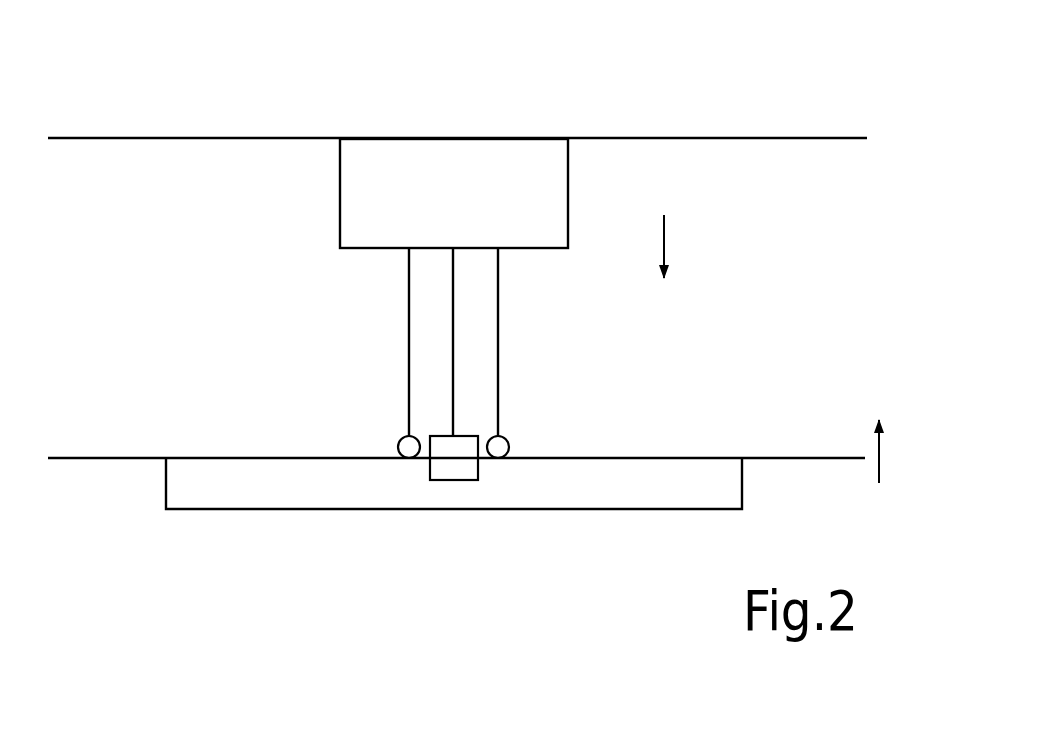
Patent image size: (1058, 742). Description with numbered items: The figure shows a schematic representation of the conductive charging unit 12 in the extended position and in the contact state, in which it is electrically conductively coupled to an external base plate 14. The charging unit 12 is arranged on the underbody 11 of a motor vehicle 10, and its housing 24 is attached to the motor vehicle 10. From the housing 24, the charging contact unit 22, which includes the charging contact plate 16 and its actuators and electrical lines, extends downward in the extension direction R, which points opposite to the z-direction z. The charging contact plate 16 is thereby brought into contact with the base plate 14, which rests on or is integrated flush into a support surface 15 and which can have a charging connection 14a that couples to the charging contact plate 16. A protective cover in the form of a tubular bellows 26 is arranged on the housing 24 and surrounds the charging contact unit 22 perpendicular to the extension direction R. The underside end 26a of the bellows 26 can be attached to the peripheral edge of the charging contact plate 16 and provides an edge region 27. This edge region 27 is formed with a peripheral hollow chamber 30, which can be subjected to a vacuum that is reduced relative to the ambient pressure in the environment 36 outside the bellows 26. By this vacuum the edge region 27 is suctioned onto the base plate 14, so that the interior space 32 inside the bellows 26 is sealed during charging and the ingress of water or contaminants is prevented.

The motor vehicle 10 is at (556, 103).
The underbody 11 is at (665, 138).
The housing 24 is at (336, 192).
The protective cover (tubular bellows) 26 is at (403, 300).
The charging contact unit 22 is at (460, 316).
The interior space 32 is at (420, 344).
The underside end 26a is at (462, 400).
The edge region 27 is at (396, 435).
The charging contact plate 16 is at (447, 465).
The conductive charging unit 12 is at (660, 197).
The extension direction R is at (678, 246).
The environment 36 is at (780, 323).
The support surface 15 is at (92, 458).
The base plate 14 is at (268, 450).
The charging connection 14a is at (457, 470).
The peripheral hollow chamber 30 is at (409, 457).
The z-direction z is at (890, 439).